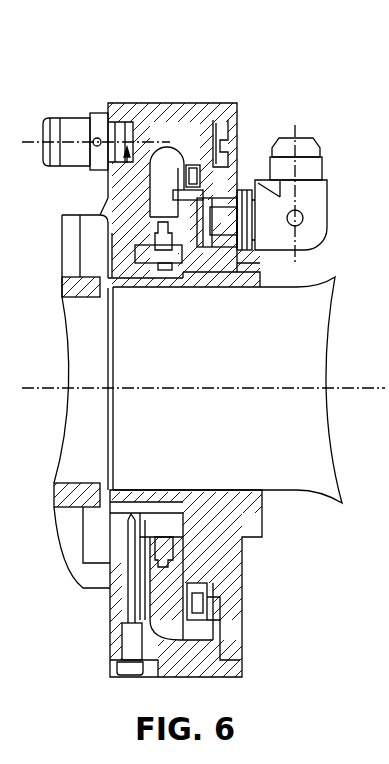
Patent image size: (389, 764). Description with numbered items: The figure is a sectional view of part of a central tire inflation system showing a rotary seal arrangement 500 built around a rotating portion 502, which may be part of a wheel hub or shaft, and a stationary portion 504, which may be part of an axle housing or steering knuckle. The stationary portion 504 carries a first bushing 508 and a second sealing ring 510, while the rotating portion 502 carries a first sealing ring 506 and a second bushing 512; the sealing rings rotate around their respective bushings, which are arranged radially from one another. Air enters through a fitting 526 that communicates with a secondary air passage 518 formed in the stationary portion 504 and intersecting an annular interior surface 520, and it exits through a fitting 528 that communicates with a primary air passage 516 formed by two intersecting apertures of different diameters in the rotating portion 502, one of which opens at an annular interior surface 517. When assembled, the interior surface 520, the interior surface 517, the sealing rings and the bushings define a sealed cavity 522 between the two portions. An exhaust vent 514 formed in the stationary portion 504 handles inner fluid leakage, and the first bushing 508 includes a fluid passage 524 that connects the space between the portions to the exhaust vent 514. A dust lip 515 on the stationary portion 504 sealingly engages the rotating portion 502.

The rotary seal arrangement 500 is at (293, 60).
The rotating portion 502 is at (227, 560).
The stationary portion 504 is at (207, 117).
The first sealing ring 506 is at (150, 232).
The first bushing 508 is at (157, 257).
The second sealing ring 510 is at (197, 145).
The second bushing 512 is at (188, 192).
The exhaust vent 514 is at (128, 648).
The dust lip 515 is at (227, 140).
The primary air passage 516 is at (216, 222).
The interior surface 517 is at (180, 577).
The secondary air passage 518 is at (127, 163).
The interior surface 520 is at (152, 622).
The sealed cavity 522 is at (182, 615).
The fluid passage 524 is at (172, 268).
The fitting 526 is at (72, 125).
The fitting 528 is at (305, 193).